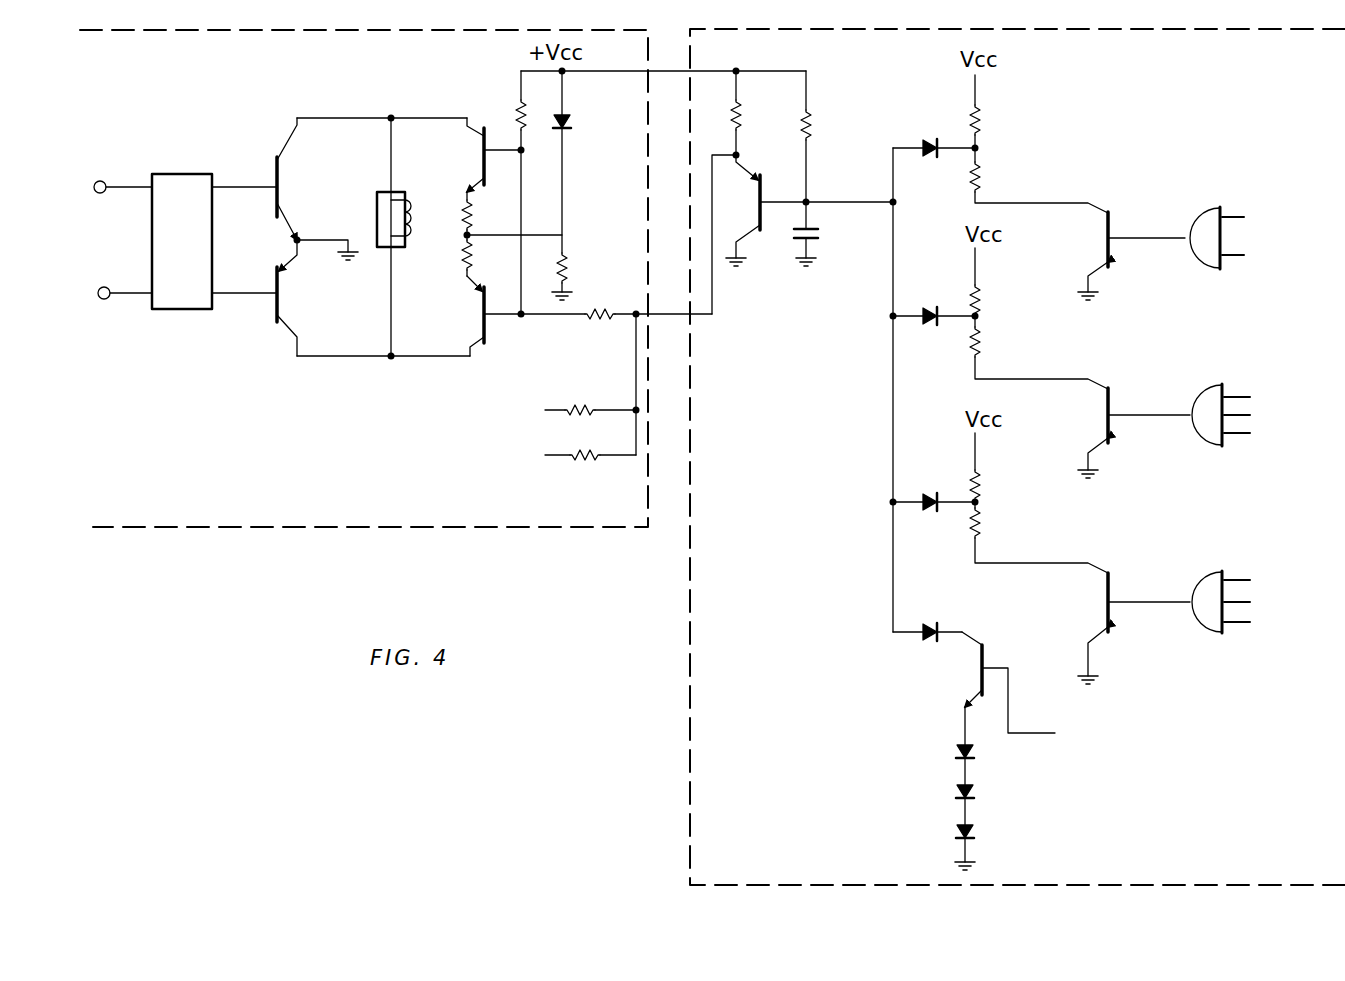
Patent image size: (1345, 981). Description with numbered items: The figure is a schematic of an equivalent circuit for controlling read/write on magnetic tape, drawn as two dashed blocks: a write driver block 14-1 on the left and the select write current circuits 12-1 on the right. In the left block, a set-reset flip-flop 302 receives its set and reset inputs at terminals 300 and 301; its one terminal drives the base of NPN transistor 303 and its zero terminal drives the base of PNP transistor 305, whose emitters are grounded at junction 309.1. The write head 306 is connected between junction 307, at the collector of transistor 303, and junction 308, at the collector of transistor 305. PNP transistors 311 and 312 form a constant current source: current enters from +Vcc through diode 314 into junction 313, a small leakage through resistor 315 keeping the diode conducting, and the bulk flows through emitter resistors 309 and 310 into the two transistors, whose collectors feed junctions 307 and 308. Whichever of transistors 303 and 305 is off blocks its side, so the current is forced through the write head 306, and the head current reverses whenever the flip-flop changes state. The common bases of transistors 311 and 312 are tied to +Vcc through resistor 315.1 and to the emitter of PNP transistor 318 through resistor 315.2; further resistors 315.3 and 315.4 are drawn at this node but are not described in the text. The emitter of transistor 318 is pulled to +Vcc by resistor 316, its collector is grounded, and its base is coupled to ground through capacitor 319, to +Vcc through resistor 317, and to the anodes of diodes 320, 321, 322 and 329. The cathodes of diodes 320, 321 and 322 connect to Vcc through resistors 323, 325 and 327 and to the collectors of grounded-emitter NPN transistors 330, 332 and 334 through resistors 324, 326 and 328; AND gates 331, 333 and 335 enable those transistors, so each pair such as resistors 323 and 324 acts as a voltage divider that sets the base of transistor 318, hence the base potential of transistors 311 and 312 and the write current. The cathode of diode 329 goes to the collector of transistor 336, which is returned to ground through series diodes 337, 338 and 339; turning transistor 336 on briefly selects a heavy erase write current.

The set input terminal 300 is at (99, 181).
The reset input terminal 301 is at (100, 299).
The flip-flop 302 is at (186, 174).
The NPN transistor 303 is at (283, 178).
The PNP transistor 305 is at (283, 297).
The write head 306 is at (418, 212).
The junction 307 is at (391, 116).
The junction 308 is at (391, 358).
The resistor 309 is at (455, 210).
The junction 309.1 is at (299, 237).
The resistor 310 is at (460, 268).
The PNP transistor 311 is at (482, 138).
The PNP transistor 312 is at (490, 325).
The junction 313 is at (470, 238).
The diode 314 is at (568, 124).
The resistor 315 is at (570, 268).
The resistor 315.1 is at (518, 108).
The resistor 315.2 is at (598, 324).
The resistor 315.3 is at (587, 405).
The resistor 315.4 is at (588, 465).
The resistor 316 is at (775, 100).
The resistor 317 is at (812, 122).
The PNP transistor 318 is at (757, 220).
The capacitor 319 is at (812, 240).
The diode 320 is at (935, 152).
The diode 321 is at (935, 322).
The diode 322 is at (937, 508).
The resistor 323 is at (982, 122).
The resistor 324 is at (983, 180).
The resistor 325 is at (983, 300).
The resistor 326 is at (983, 336).
The resistor 327 is at (983, 484).
The resistor 328 is at (983, 521).
The diode 329 is at (932, 622).
The NPN transistor 330 is at (1113, 230).
The AND gate 331 is at (1213, 210).
The NPN transistor 332 is at (1113, 405).
The AND gate 333 is at (1216, 386).
The NPN transistor 334 is at (1115, 597).
The AND gate 335 is at (1215, 574).
The transistor 336 is at (980, 684).
The diode 337 is at (970, 758).
The diode 338 is at (970, 800).
The diode 339 is at (970, 840).
The control circuit block 14-1 is at (357, 527).
The select write current circuits 12-1 is at (690, 778).